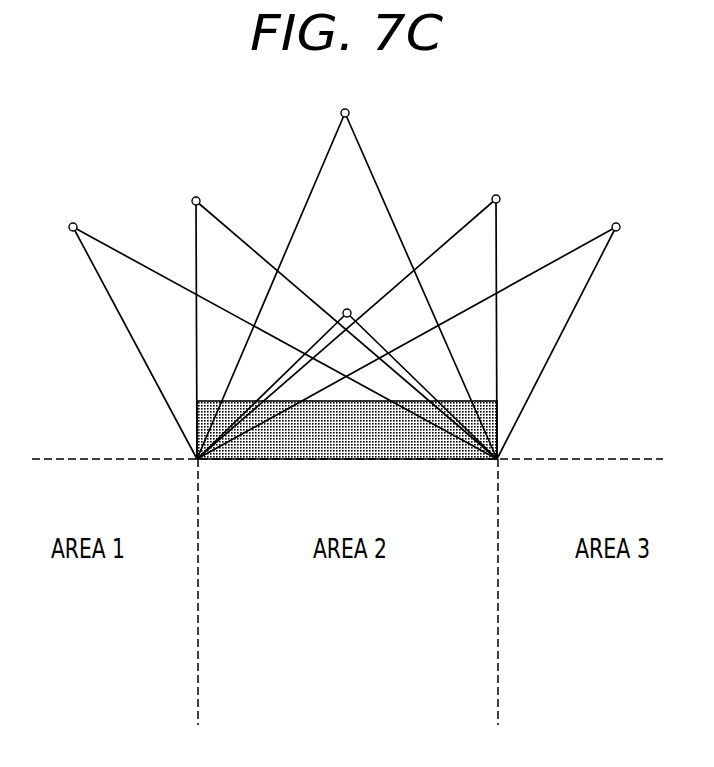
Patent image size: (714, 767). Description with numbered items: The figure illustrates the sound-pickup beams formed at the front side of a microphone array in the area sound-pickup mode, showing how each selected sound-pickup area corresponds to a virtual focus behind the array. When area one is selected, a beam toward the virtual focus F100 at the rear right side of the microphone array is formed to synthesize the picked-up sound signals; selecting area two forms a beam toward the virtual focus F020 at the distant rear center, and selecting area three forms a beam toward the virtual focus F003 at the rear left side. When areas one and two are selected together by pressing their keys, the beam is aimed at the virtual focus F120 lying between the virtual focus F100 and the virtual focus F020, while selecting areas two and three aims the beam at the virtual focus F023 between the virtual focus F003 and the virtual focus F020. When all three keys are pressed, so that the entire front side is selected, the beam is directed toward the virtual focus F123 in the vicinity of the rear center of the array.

The virtual focus F003 is at (283, 326).
The virtual focus F023 is at (344, 314).
The virtual focus F020 is at (347, 268).
The virtual focus F123 is at (347, 370).
The virtual focus F120 is at (370, 312).
The virtual focus F100 is at (429, 326).